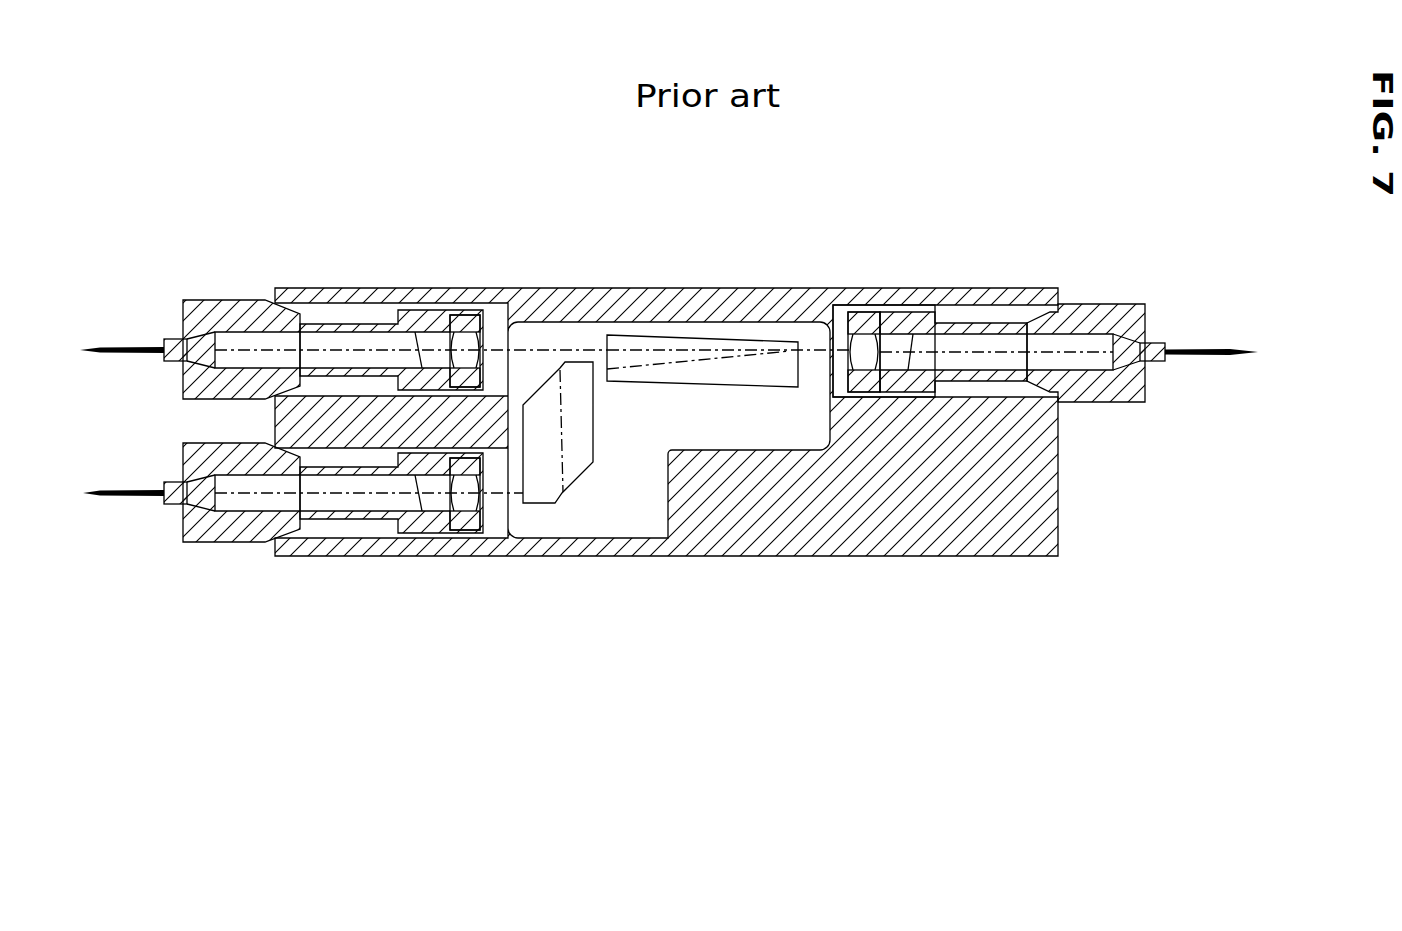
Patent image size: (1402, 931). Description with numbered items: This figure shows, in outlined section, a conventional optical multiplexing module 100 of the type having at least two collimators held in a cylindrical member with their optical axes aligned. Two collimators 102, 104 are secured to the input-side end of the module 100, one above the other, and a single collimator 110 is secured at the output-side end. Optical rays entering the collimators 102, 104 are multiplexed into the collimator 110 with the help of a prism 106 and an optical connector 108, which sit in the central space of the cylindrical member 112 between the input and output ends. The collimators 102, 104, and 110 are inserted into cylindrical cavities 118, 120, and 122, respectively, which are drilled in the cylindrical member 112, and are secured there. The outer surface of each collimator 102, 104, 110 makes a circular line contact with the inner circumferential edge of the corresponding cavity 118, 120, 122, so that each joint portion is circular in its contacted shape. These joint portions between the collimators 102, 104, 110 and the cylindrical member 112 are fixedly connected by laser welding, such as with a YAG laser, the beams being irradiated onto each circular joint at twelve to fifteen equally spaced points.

The optical multiplexing module 100 is at (1085, 222).
The collimator 102 is at (242, 300).
The collimator 104 is at (213, 534).
The prism 106 is at (540, 506).
The optical connector 108 is at (710, 327).
The collimator 110 is at (1100, 405).
The cylindrical member 112 is at (909, 547).
The cylindrical cavity 118 is at (363, 310).
The cylindrical cavity 120 is at (327, 531).
The cylindrical cavity 122 is at (994, 322).